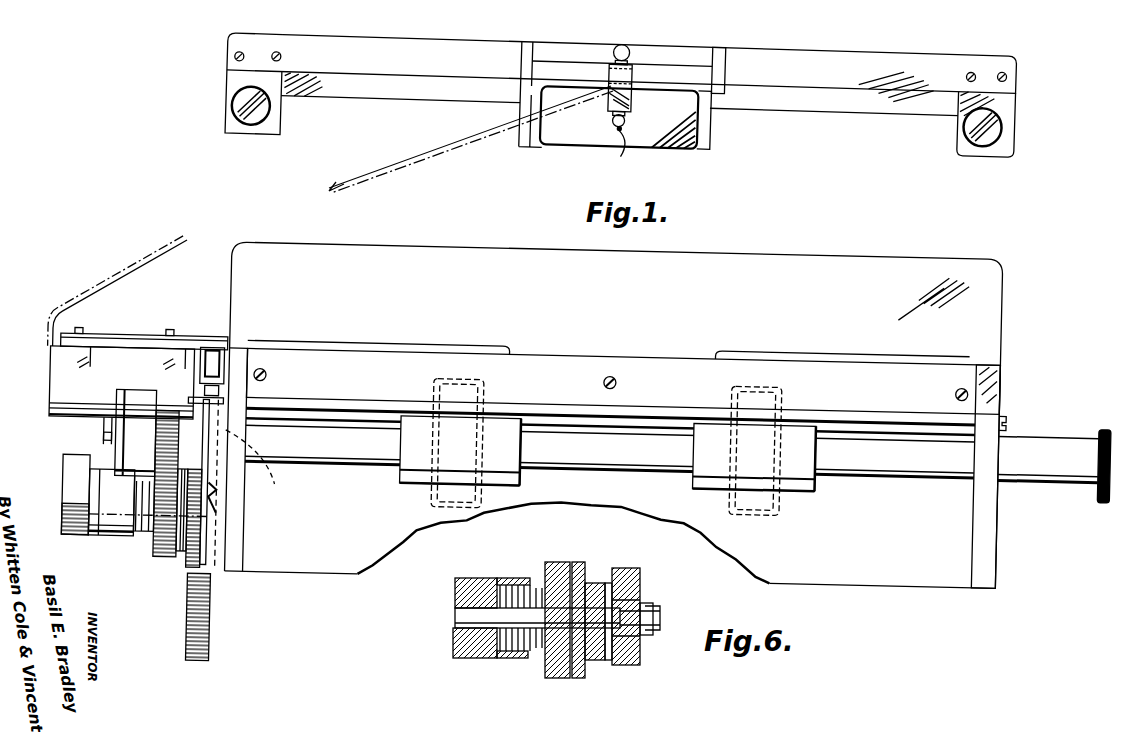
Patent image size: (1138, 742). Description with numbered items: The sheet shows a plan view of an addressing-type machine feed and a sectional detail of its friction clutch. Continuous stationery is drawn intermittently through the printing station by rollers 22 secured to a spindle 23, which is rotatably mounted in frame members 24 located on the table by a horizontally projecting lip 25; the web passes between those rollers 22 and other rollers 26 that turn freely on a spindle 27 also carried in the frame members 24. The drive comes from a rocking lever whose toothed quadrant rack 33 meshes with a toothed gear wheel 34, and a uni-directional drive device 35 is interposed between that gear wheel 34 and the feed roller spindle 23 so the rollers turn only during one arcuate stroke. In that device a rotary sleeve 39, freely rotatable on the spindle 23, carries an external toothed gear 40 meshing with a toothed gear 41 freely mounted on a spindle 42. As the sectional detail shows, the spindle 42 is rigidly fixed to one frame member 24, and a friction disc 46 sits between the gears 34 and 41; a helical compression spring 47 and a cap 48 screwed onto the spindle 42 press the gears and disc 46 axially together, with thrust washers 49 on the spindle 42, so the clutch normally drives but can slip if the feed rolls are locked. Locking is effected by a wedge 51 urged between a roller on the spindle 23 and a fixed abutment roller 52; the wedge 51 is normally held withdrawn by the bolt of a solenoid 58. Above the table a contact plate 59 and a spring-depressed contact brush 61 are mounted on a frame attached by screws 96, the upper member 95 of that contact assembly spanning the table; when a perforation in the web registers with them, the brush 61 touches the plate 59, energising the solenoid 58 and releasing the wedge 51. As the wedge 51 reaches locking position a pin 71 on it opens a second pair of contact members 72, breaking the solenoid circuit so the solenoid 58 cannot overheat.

In FIG. 1, the cross arm 95 is at (443, 45).
In FIG. 1, the screws 96 is at (250, 114).
In FIG. 1, the contact plate 59 is at (567, 127).
In FIG. 1, the contact brush 61 is at (624, 130).
In FIG. 1, the horizontally projecting lip 25 is at (1000, 302).
In FIG. 1, the frame members 24 is at (987, 388).
In FIG. 6, the frame members 24 is at (642, 653).
In FIG. 1, the spindle 27 is at (897, 452).
In FIG. 1, the rollers 26 is at (498, 431).
In FIG. 1, the rollers 22 is at (460, 487).
In FIG. 1, the wedge 51 is at (223, 395).
In FIG. 1, the solenoid 58 is at (68, 388).
In FIG. 1, the roller 52 is at (218, 355).
In FIG. 1, the rotary sleeve 39 is at (140, 455).
In FIG. 1, the uni-directional drive device 35 is at (108, 428).
In FIG. 1, the spindle 23 is at (108, 438).
In FIG. 1, the cap 48 is at (72, 526).
In FIG. 6, the cap 48 is at (455, 595).
In FIG. 1, the toothed gear 41 is at (163, 560).
In FIG. 6, the toothed gear 41 is at (557, 660).
In FIG. 1, the toothed gear wheel 34 is at (188, 555).
In FIG. 6, the toothed gear wheel 34 is at (600, 660).
In FIG. 1, the friction disc 46 is at (197, 570).
In FIG. 6, the friction disc 46 is at (572, 680).
In FIG. 1, the toothed quadrant rack 33 is at (218, 615).
In FIG. 1, the toothed gear 40 is at (200, 453).
In FIG. 1, the second pair of contact members 72 is at (216, 505).
In FIG. 1, the pin 71 is at (261, 467).
In FIG. 6, the spindle 42 is at (472, 615).
In FIG. 6, the helical compression spring 47 is at (500, 658).
In FIG. 6, the thrust washers 49 is at (640, 592).